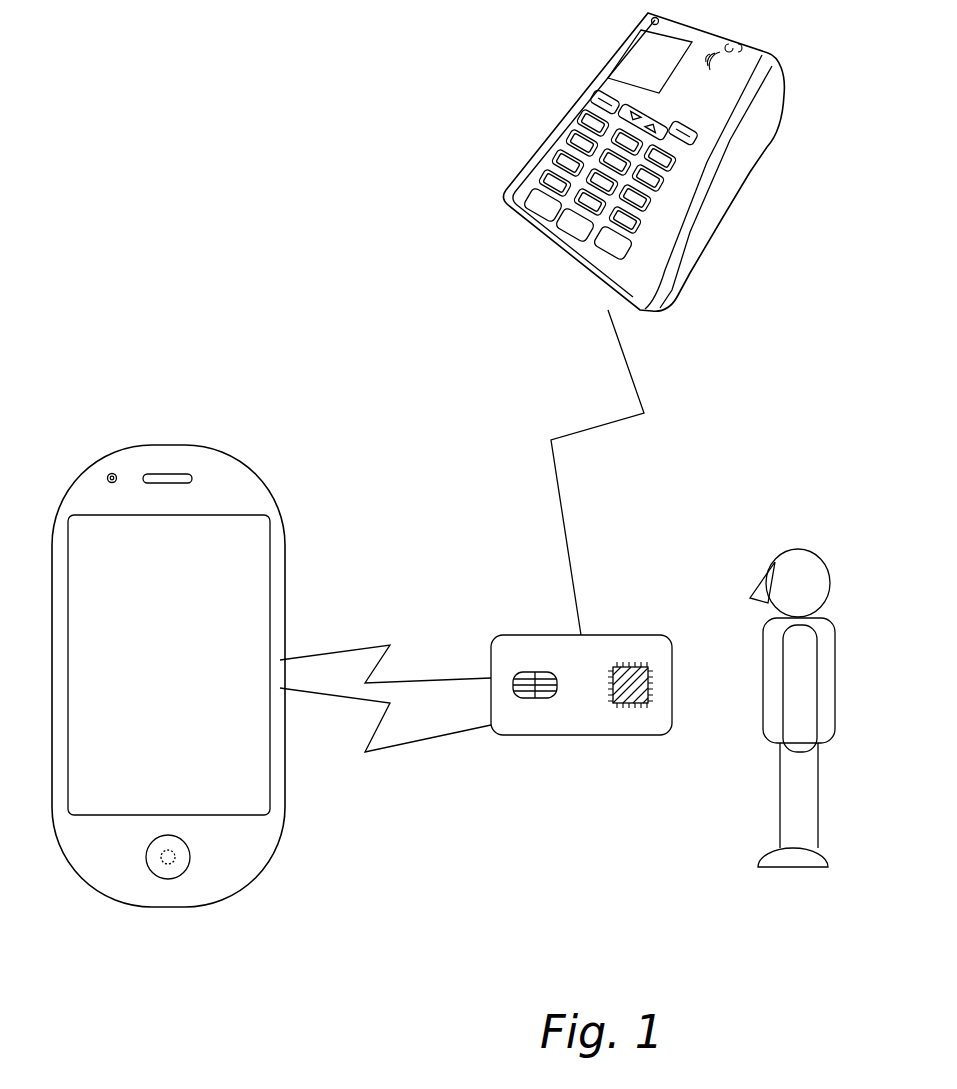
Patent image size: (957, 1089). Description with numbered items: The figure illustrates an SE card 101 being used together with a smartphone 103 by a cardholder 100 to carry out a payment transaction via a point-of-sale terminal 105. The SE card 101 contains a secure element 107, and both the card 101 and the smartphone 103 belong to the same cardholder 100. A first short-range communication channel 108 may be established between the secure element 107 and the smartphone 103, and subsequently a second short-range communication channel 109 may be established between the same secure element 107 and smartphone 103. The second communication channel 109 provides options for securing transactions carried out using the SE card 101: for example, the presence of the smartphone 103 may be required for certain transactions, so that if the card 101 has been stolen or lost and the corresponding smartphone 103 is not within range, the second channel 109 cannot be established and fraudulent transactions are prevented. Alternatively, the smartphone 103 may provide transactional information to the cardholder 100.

The cardholder 100 is at (807, 868).
The SE card 101 is at (547, 735).
The smartphone 103 is at (212, 905).
The point-of-sale (POS) terminal 105 is at (750, 180).
The secure element 107 is at (628, 665).
The first short-range communication channel 108 is at (376, 645).
The second short-range communication channel 109 is at (387, 750).